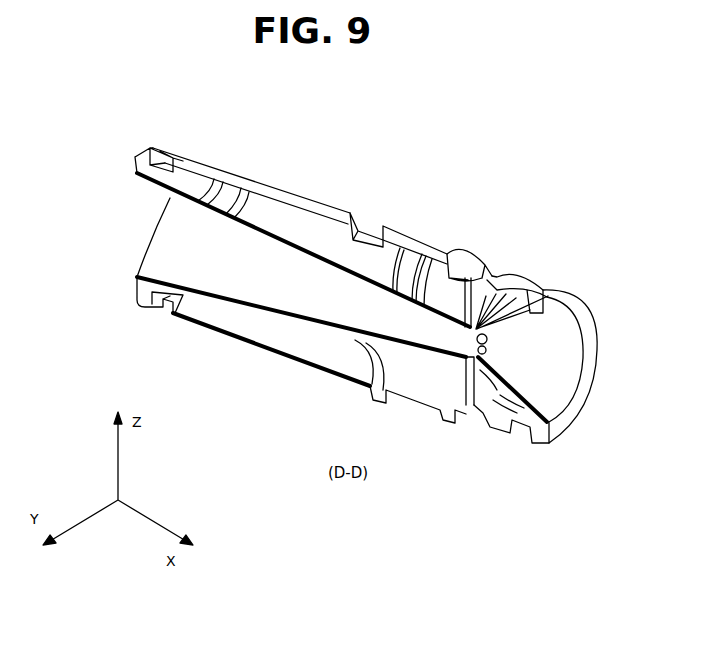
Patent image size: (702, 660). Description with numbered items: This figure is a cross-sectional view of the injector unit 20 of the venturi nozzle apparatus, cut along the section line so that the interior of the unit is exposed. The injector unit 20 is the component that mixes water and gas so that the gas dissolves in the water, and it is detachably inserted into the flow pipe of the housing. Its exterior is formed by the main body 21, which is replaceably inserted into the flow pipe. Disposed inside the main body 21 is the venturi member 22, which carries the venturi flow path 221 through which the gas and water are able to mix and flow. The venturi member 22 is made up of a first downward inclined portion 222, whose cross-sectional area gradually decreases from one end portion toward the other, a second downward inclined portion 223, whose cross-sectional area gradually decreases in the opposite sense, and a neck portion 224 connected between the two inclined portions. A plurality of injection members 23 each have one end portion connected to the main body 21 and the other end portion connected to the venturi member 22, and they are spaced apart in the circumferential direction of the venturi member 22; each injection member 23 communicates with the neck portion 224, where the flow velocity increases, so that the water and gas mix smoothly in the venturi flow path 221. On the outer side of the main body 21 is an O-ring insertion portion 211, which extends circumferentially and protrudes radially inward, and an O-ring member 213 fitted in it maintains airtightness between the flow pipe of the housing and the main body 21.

The injector unit 20 is at (359, 98).
The main body 21 is at (263, 352).
The venturi member 22 is at (300, 315).
The injection member 23 is at (467, 405).
The O-ring insertion portion 211 is at (362, 220).
The O-ring member 213 is at (485, 273).
The venturi flow path 221 is at (194, 239).
The first downward inclined portion 222 is at (550, 287).
The second downward inclined portion 223 is at (242, 203).
The neck portion 224 is at (468, 277).